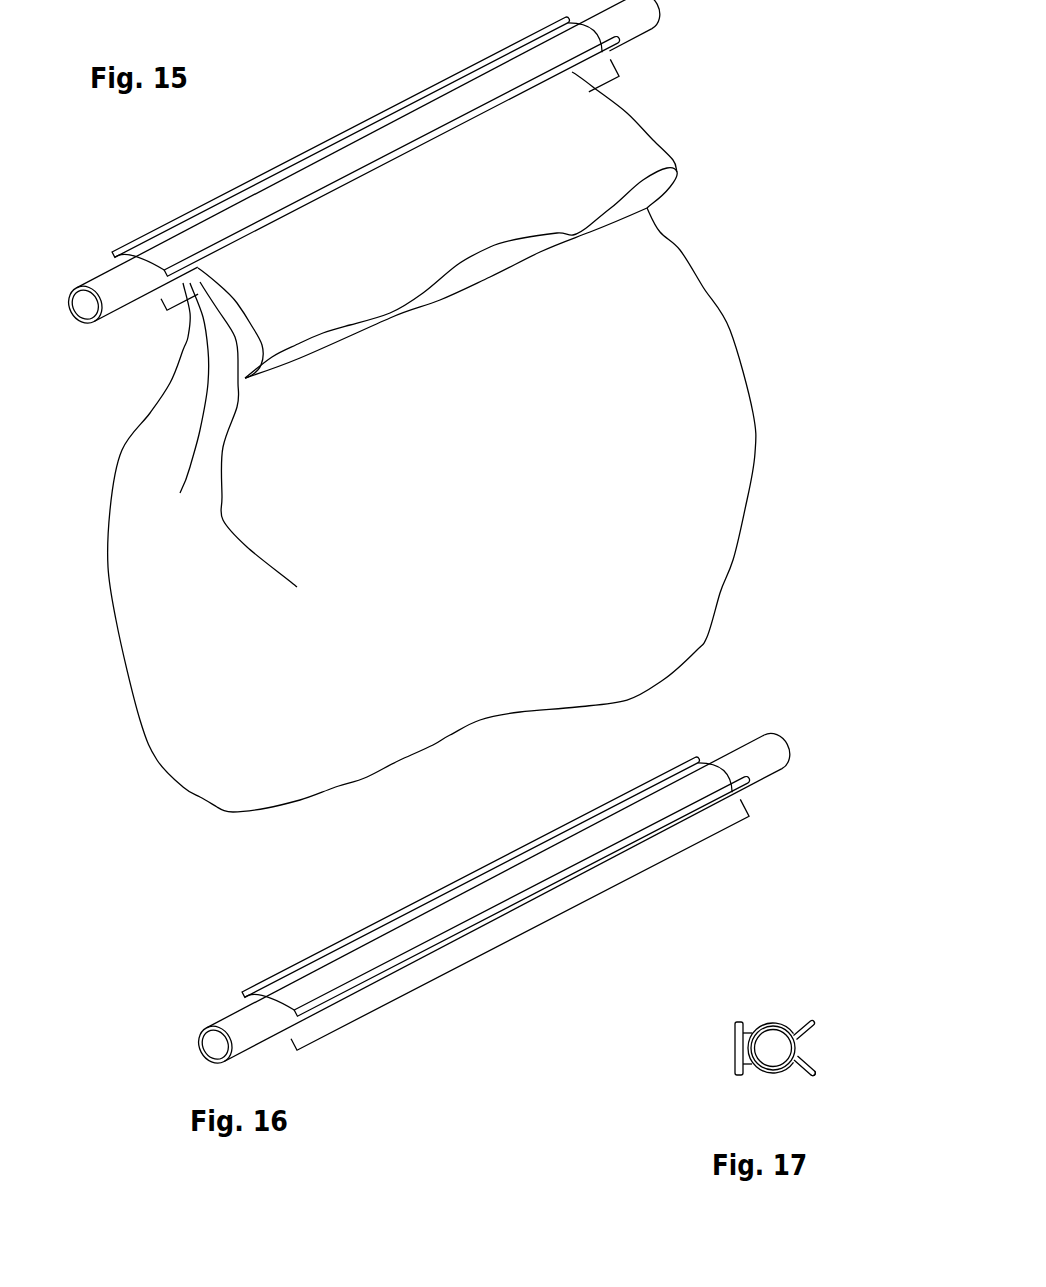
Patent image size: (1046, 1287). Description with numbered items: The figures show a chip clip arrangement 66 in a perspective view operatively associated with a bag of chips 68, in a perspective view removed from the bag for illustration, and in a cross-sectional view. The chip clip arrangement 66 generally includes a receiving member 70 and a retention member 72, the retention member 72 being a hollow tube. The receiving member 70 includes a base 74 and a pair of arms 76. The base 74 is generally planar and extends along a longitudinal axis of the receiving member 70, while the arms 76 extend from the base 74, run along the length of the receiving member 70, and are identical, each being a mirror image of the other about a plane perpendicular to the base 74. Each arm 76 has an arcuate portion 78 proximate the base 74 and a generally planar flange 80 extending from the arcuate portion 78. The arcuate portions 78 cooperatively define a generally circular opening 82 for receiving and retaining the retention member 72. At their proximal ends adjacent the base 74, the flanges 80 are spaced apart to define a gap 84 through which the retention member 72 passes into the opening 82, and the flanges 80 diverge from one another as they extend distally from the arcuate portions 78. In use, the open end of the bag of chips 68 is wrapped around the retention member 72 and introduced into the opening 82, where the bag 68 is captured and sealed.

In FIG. 15, the chip clip arrangement 66 is at (373, 160).
In FIG. 16, the chip clip arrangement 66 is at (503, 918).
In FIG. 17, the chip clip arrangement 66 is at (764, 1041).
In FIG. 15, the bag of chips 68 is at (612, 282).
In FIG. 15, the receiving member 70 is at (458, 77).
In FIG. 16, the receiving member 70 is at (471, 876).
In FIG. 15, the retention member 72 is at (115, 283).
In FIG. 17, the base 74 is at (735, 1048).
In FIG. 17, the arms 76 is at (789, 1026).
In FIG. 17, the arcuate portion 78 is at (773, 1022).
In FIG. 17, the flange 80 is at (816, 1068).
In FIG. 17, the opening 82 is at (763, 1068).
In FIG. 16, the gap 84 is at (313, 1012).